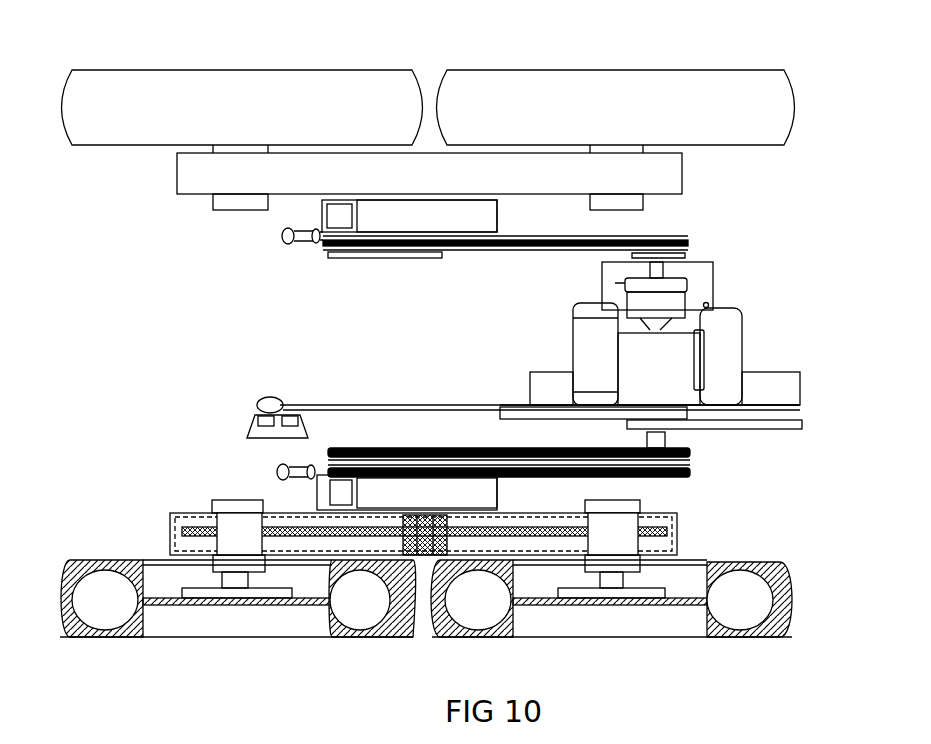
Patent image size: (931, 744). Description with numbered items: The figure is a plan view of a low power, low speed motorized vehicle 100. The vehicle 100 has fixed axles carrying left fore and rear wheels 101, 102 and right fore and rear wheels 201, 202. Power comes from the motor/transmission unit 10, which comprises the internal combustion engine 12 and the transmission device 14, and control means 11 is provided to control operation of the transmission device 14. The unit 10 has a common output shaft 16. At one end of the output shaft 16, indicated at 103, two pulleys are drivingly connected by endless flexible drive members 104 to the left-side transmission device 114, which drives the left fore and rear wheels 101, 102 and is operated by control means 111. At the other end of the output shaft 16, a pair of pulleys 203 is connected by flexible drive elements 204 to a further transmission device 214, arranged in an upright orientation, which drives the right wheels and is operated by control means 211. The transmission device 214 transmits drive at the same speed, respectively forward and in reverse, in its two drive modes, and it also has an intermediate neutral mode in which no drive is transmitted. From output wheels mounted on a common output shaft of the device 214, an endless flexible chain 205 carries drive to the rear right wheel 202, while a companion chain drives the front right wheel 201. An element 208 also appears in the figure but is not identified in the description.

The motor/transmission unit 10 is at (805, 334).
The control means 11 is at (238, 420).
The internal combustion engine 12 is at (728, 300).
The transmission device 14 is at (788, 436).
The common output shaft 16 is at (650, 266).
The motorized vehicle 100 is at (130, 240).
The left fore wheel 101 is at (724, 90).
The left rear wheel 102 is at (194, 97).
The output shaft end with two pulleys 103 is at (710, 236).
The endless flexible drive members 104 is at (534, 228).
The control means 111 is at (280, 252).
The transmission device 114 is at (418, 270).
The right fore wheel 201 is at (773, 637).
The right rear wheel 202 is at (80, 635).
The pair of pulleys 203 is at (680, 483).
The flexible drive elements 204 is at (546, 484).
The endless flexible chain 205 is at (305, 548).
The track roller 208 is at (503, 568).
The control means 211 is at (270, 475).
The transmission device 214 is at (425, 442).